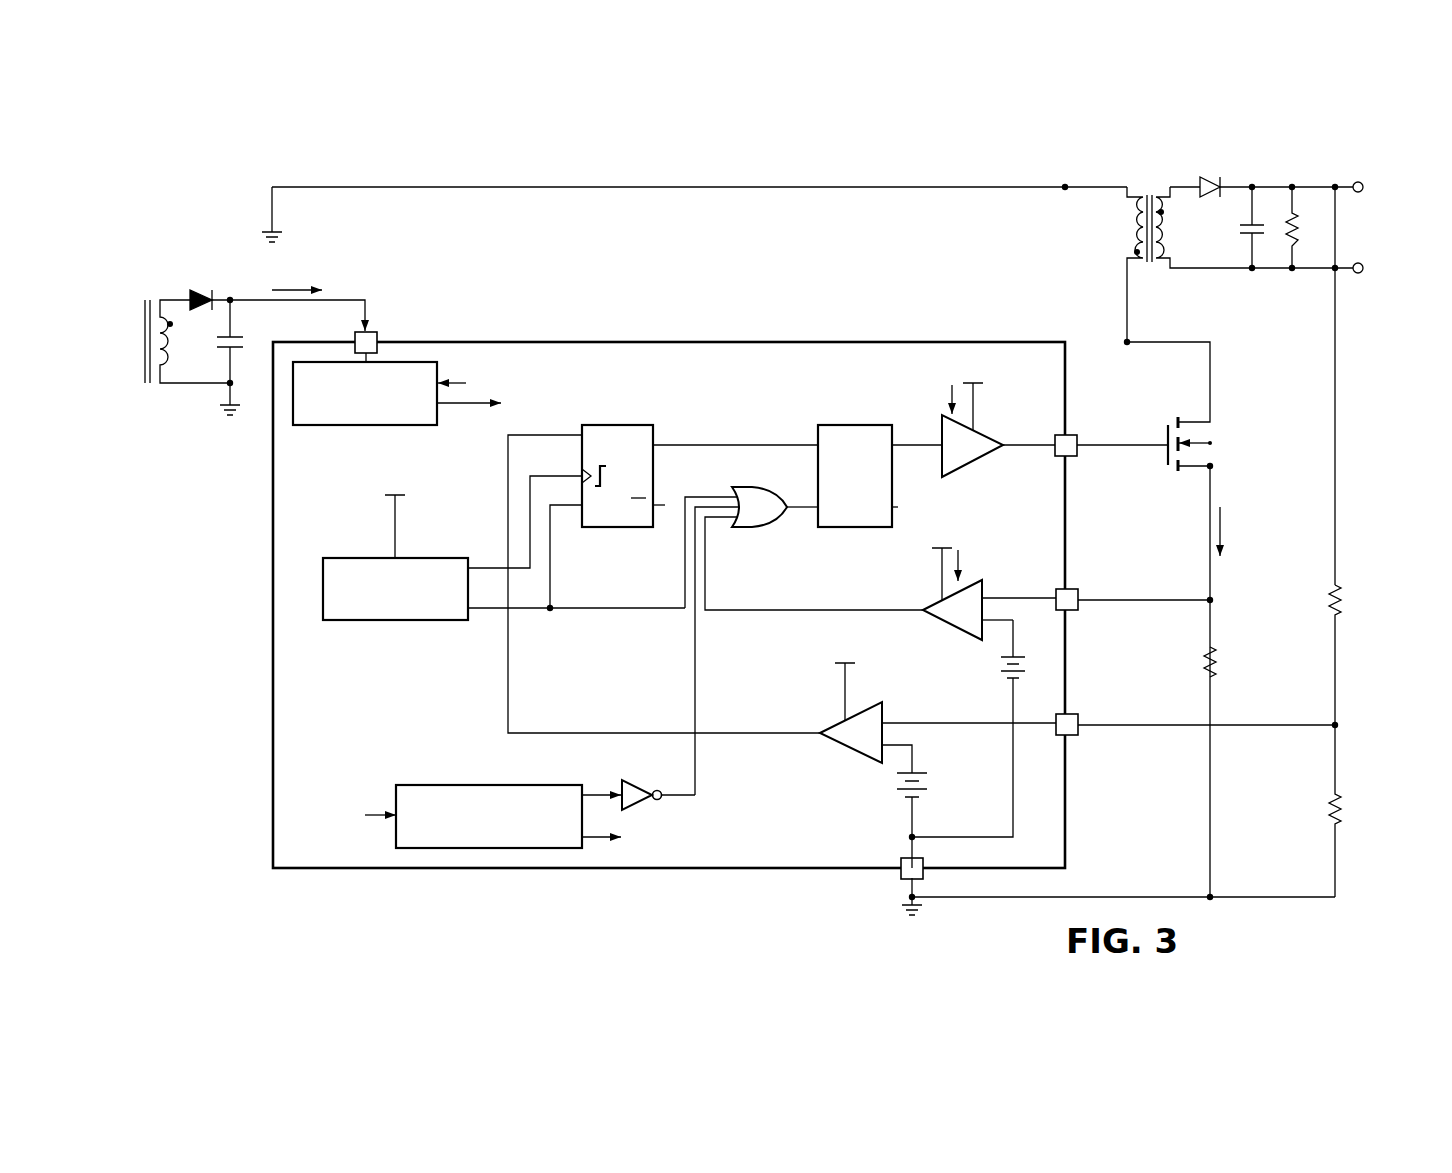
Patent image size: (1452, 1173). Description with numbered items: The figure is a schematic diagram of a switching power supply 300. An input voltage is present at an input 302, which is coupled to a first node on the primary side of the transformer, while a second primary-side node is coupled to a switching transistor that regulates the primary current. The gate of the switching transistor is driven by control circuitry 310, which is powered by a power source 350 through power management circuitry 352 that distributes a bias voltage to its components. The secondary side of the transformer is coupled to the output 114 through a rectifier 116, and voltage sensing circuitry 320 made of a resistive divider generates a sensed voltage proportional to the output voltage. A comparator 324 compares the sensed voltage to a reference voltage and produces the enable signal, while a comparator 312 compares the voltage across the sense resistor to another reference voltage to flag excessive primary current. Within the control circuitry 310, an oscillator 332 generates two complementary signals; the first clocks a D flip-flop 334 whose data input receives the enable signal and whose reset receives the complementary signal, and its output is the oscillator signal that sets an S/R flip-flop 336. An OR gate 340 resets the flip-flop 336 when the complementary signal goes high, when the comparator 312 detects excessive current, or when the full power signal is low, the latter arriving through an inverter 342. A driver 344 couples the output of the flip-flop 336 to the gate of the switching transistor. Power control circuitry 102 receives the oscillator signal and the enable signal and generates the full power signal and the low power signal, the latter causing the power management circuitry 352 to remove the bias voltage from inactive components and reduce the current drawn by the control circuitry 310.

The switching power supply 300 is at (240, 156).
The input 302 is at (310, 219).
The power source 350 is at (188, 270).
The control circuitry 310 is at (707, 339).
The power management circuitry 352 is at (333, 427).
The oscillator 332 is at (386, 621).
The D flip-flop 334 is at (618, 422).
The OR gate 340 is at (753, 530).
The S/R flip-flop 336 is at (858, 422).
The driver 344 is at (975, 462).
The comparator 312 is at (935, 622).
The comparator 324 is at (835, 720).
The power control circuitry 102 is at (490, 784).
The inverter 342 is at (661, 768).
The rectifier 116 is at (1282, 160).
The output 114 is at (1397, 289).
The voltage sensing circuitry 320 is at (1357, 672).